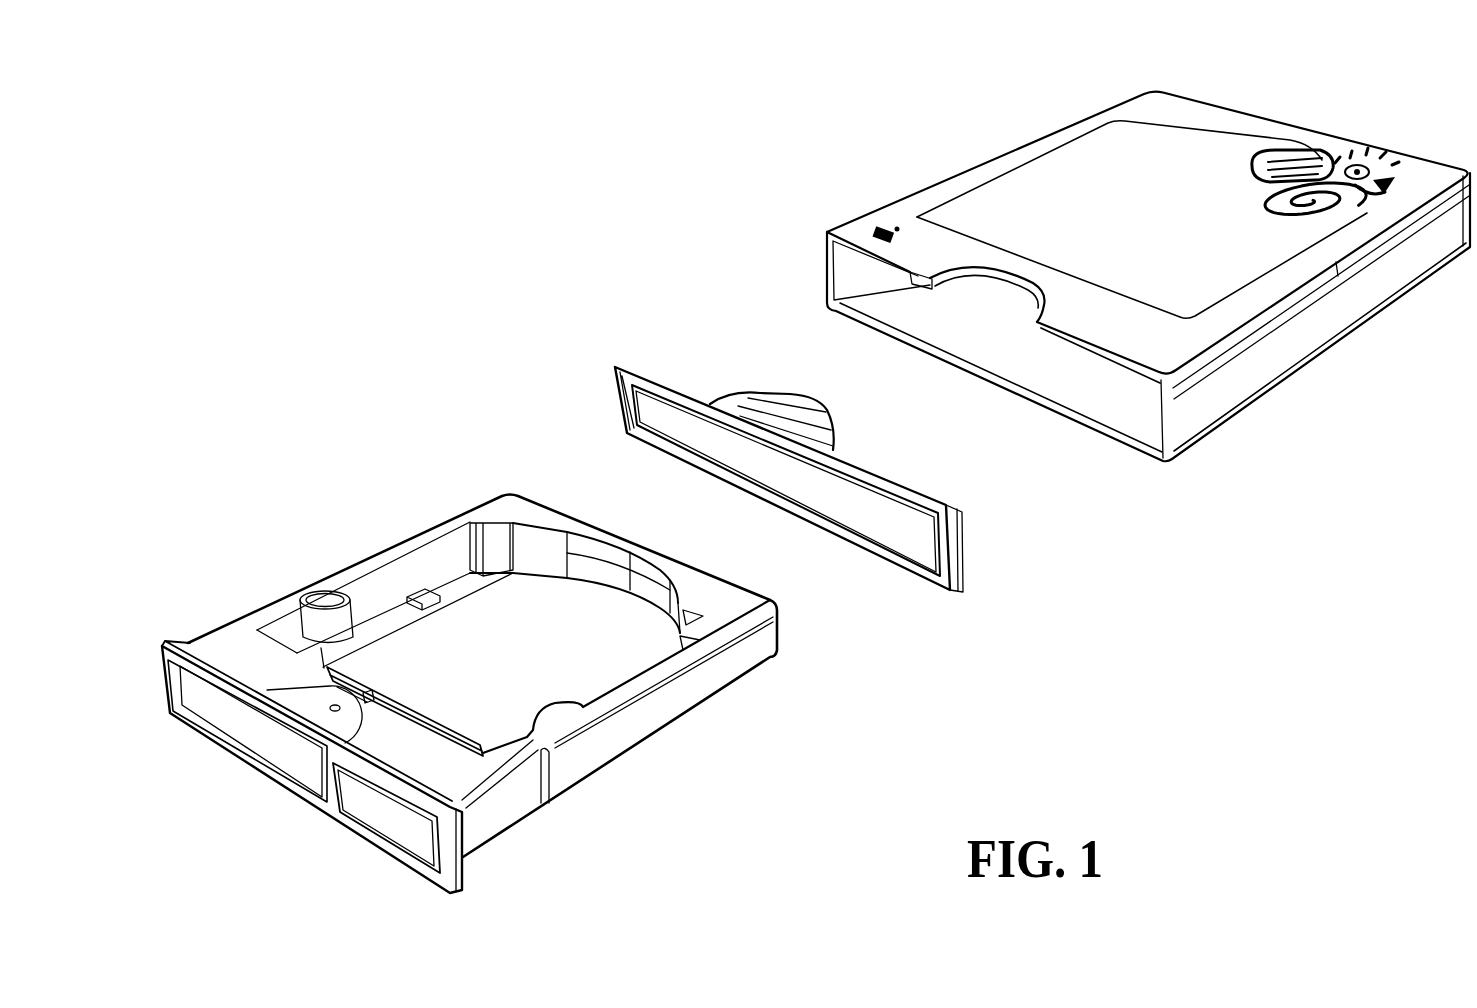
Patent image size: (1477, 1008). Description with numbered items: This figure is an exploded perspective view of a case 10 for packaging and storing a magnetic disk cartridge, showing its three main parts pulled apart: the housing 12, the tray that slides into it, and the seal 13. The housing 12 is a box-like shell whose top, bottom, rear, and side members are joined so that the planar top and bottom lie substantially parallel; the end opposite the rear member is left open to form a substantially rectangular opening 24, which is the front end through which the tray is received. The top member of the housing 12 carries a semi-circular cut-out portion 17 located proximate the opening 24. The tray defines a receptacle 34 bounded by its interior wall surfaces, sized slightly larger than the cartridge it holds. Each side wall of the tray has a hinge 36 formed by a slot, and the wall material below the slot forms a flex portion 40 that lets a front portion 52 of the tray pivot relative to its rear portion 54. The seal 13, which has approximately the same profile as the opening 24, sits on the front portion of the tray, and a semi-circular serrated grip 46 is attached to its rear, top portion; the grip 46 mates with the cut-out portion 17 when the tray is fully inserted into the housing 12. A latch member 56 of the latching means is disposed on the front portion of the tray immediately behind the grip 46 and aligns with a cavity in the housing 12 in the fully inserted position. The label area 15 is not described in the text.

The case 10 is at (554, 196).
The housing 12 is at (1297, 390).
The seal 13 is at (1000, 567).
The cartridge top label area 15 is at (1097, 203).
The cut-out portion 17 is at (980, 279).
The opening 24 is at (1083, 378).
The receptacle 34 is at (573, 673).
The hinge 36 is at (277, 597).
The flex portion 40 is at (347, 653).
The grip 46 is at (783, 394).
The front portion 52 is at (213, 627).
The rear portion 54 is at (400, 543).
The latch member 56 is at (360, 683).